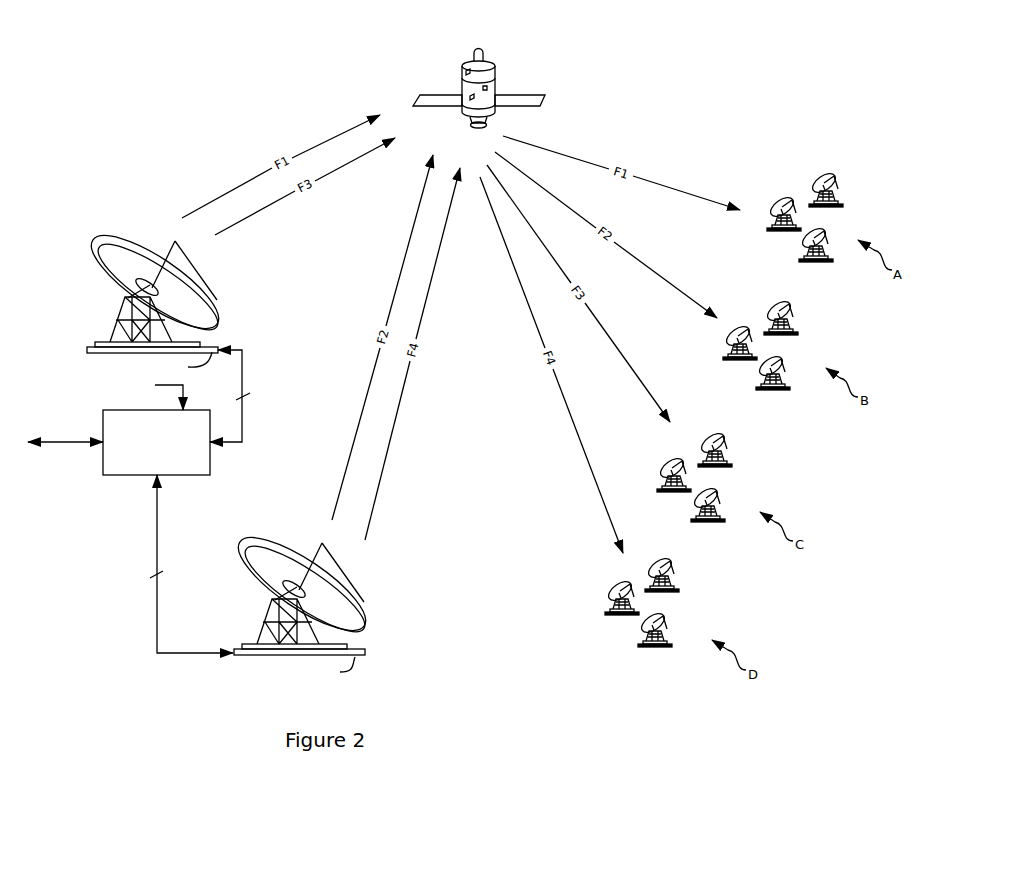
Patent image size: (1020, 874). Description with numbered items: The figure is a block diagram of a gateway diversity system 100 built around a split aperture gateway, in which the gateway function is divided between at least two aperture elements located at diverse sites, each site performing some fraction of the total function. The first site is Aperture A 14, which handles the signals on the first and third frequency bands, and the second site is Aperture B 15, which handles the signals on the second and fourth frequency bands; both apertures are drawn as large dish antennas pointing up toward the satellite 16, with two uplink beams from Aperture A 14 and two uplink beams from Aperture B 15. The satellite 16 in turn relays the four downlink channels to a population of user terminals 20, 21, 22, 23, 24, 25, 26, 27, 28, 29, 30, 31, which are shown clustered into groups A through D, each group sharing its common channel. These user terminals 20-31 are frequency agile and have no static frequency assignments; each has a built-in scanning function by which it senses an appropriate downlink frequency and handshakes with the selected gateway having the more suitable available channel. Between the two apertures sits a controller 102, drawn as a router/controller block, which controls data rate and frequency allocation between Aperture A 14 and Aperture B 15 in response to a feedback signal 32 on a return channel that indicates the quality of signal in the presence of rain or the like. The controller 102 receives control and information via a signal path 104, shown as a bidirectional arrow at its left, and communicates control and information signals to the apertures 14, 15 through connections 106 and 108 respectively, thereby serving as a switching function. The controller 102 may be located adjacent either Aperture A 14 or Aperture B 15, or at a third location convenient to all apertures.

The Aperture A 14 is at (148, 240).
The Aperture B 15 is at (268, 545).
The satellite 16 is at (462, 62).
The user terminal 20 is at (825, 172).
The user terminal 21 is at (780, 208).
The user terminal 22 is at (800, 257).
The user terminal 23 is at (779, 315).
The user terminal 24 is at (740, 338).
The user terminal 25 is at (755, 393).
The user terminal 26 is at (735, 440).
The user terminal 27 is at (665, 462).
The user terminal 28 is at (686, 522).
The user terminal 29 is at (658, 565).
The user terminal 30 is at (622, 592).
The user terminal 31 is at (638, 650).
The feedback signal 32 is at (160, 384).
The gateway diversity system 100 is at (468, 602).
The controller 102 is at (130, 478).
The signal path 104 is at (75, 440).
The connection 106 is at (243, 362).
The connection 108 is at (157, 553).